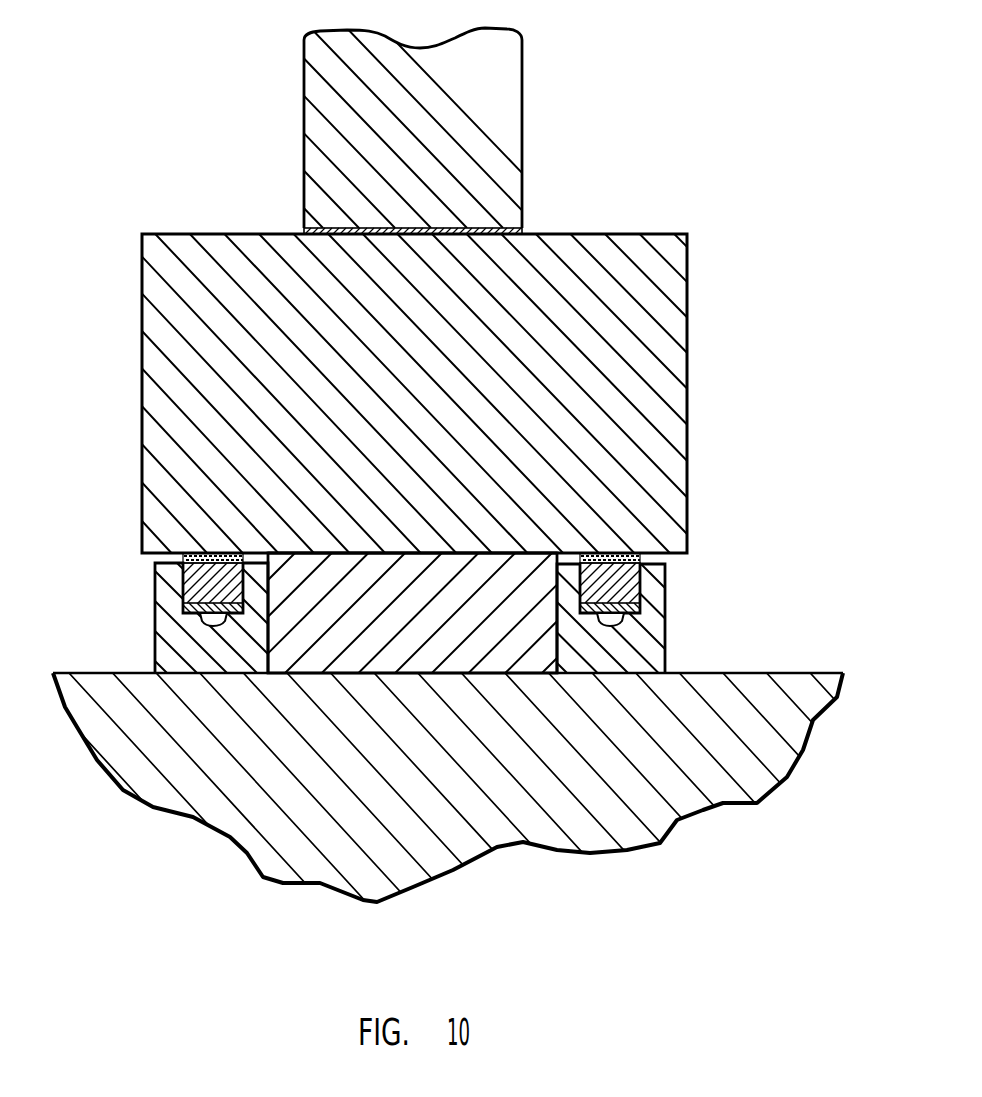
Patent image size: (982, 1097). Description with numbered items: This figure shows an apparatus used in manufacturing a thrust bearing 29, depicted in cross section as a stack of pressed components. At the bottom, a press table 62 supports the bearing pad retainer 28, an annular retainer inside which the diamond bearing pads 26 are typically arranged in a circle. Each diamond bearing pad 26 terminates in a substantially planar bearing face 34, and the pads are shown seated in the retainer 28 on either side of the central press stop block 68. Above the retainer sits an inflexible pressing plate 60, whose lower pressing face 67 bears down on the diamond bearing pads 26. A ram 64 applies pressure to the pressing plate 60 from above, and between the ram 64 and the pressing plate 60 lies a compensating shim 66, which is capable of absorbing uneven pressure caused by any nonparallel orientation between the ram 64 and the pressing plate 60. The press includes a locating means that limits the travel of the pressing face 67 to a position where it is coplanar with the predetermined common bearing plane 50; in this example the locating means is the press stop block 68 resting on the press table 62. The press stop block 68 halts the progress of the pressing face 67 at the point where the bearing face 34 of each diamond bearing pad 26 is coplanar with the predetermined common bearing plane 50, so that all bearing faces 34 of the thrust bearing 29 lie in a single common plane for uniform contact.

The diamond bearing pad 26 is at (617, 592).
The annular bearing pad retainer 28 is at (192, 652).
The thrust bearing 29 is at (159, 588).
The bearing face 34 is at (197, 553).
The predetermined common bearing plane 50 is at (183, 558).
The pressing plate 60 is at (664, 358).
The press table 62 is at (140, 750).
The ram 64 is at (507, 148).
The compensating shim 66 is at (523, 232).
The pressing face 67 is at (470, 553).
The press stop block 68 is at (483, 632).